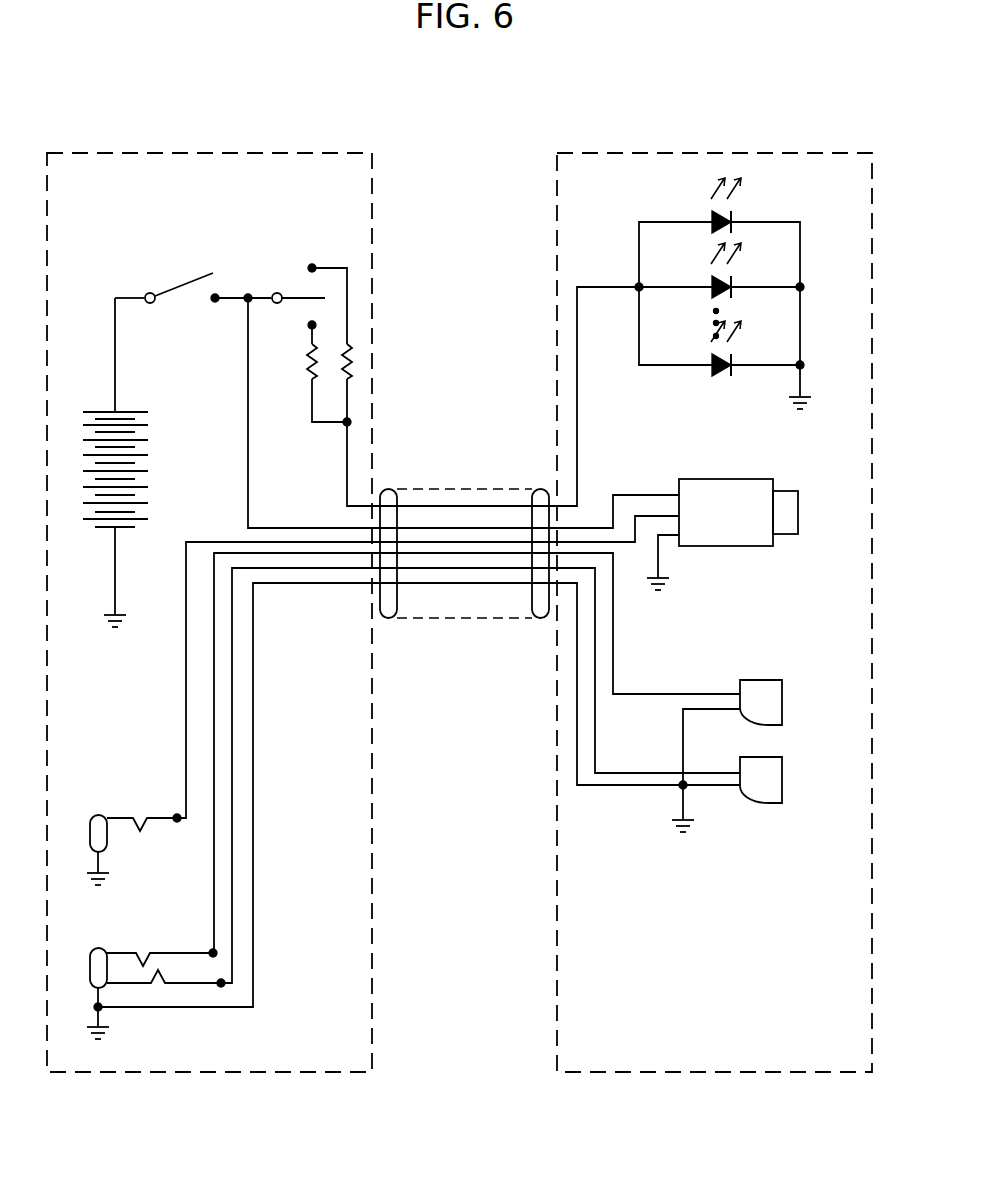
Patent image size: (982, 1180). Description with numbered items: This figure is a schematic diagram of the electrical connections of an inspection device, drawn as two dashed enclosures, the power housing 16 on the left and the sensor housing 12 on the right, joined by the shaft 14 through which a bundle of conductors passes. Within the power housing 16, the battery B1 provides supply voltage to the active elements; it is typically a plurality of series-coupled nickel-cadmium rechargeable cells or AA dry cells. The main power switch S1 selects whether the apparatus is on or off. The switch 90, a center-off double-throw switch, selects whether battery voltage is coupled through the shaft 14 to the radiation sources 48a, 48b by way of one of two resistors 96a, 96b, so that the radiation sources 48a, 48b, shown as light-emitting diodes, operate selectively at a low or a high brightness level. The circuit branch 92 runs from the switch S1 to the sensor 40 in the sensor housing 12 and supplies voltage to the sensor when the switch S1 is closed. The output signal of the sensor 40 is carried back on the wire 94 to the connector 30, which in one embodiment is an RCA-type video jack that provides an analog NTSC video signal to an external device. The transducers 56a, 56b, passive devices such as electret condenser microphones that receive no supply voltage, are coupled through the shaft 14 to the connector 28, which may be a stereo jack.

The main power switch S1 is at (174, 290).
The battery B1 is at (95, 410).
The switch 90 is at (278, 292).
The circuit branch 92 is at (248, 393).
The wire 94 is at (203, 541).
The resistor 96a is at (347, 360).
The resistor 96b is at (311, 368).
The shaft 14 is at (473, 488).
The radiation source 48a is at (712, 221).
The radiation source 48b is at (712, 286).
The sensor 40 is at (740, 529).
The transducer 56a is at (782, 700).
The transducer 56b is at (782, 780).
The connector 30 is at (99, 814).
The connector 28 is at (99, 947).
The power housing 16 is at (338, 1042).
The sensor housing 12 is at (629, 1042).